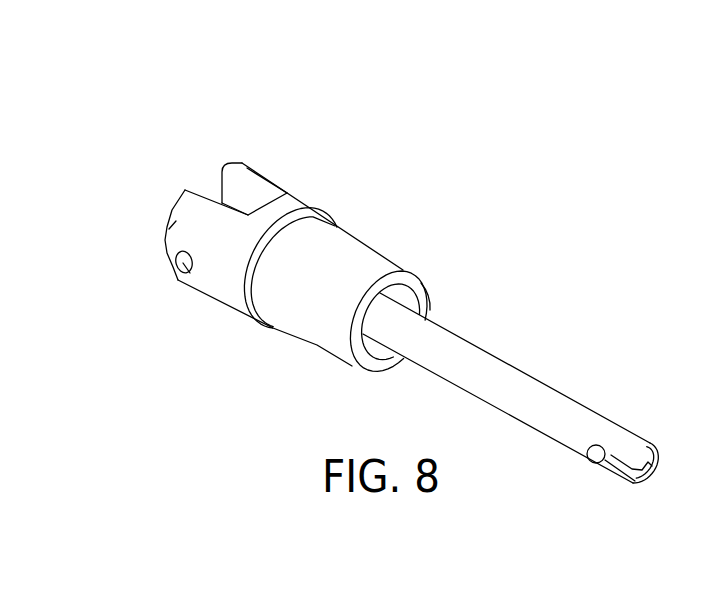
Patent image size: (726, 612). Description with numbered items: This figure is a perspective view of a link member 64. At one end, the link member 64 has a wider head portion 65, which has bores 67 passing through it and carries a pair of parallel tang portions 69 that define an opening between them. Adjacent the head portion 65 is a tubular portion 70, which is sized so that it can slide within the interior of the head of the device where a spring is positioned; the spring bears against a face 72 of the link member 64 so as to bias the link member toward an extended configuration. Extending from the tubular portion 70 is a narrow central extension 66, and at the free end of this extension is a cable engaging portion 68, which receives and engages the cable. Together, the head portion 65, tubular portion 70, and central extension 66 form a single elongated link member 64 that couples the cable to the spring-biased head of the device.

The link member 64 is at (378, 129).
The head portion 65 is at (185, 176).
The narrow central extension 66 is at (530, 378).
The bores 67 is at (176, 286).
The cable engaging portion 68 is at (593, 463).
The tang portions 69 is at (242, 183).
The tubular portion 70 is at (365, 253).
The face 72 is at (429, 305).